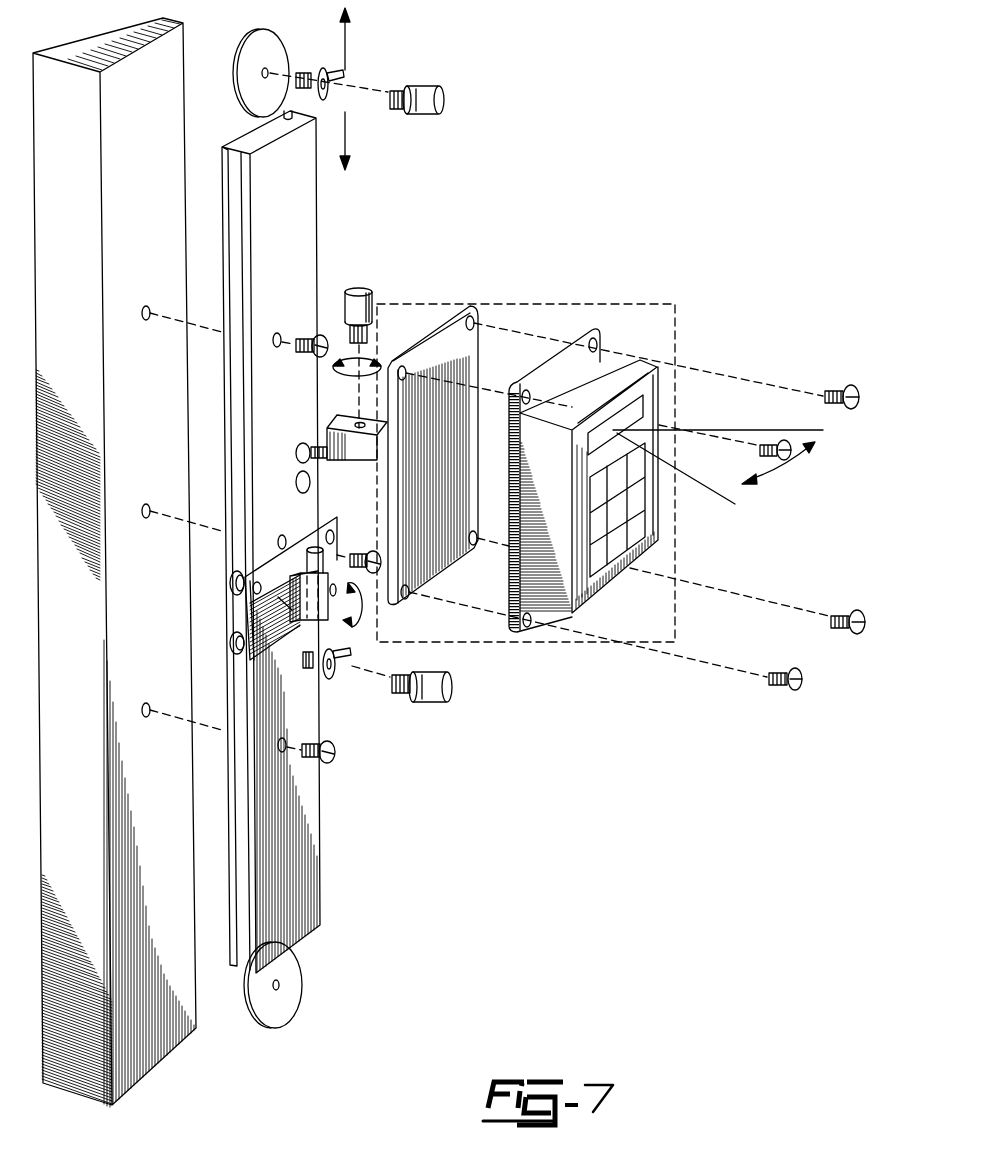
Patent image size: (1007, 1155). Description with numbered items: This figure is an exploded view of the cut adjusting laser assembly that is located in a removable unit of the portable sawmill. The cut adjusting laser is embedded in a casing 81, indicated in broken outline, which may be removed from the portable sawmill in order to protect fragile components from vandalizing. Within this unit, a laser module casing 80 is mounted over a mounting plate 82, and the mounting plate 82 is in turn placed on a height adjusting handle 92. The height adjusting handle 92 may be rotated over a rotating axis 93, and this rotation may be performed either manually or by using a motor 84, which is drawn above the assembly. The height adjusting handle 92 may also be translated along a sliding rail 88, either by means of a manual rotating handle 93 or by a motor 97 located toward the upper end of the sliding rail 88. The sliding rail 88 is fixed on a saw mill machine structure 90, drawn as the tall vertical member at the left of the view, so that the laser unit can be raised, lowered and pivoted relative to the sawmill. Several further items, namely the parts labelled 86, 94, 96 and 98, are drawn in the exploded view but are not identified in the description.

The laser module casing 80 is at (558, 338).
The casing 81 is at (677, 520).
The mounting plate 82 is at (450, 312).
The motor 84 is at (358, 289).
The clamp block 86 is at (318, 600).
The sliding rail 88 is at (307, 933).
The saw mill machine structure 90 is at (75, 835).
The height adjusting handle 92 is at (298, 660).
The rotating axis 93 is at (315, 548).
The nut and washer 94 is at (337, 677).
The knob 96 is at (450, 690).
The motor 97 is at (330, 97).
The knob 98 is at (445, 105).